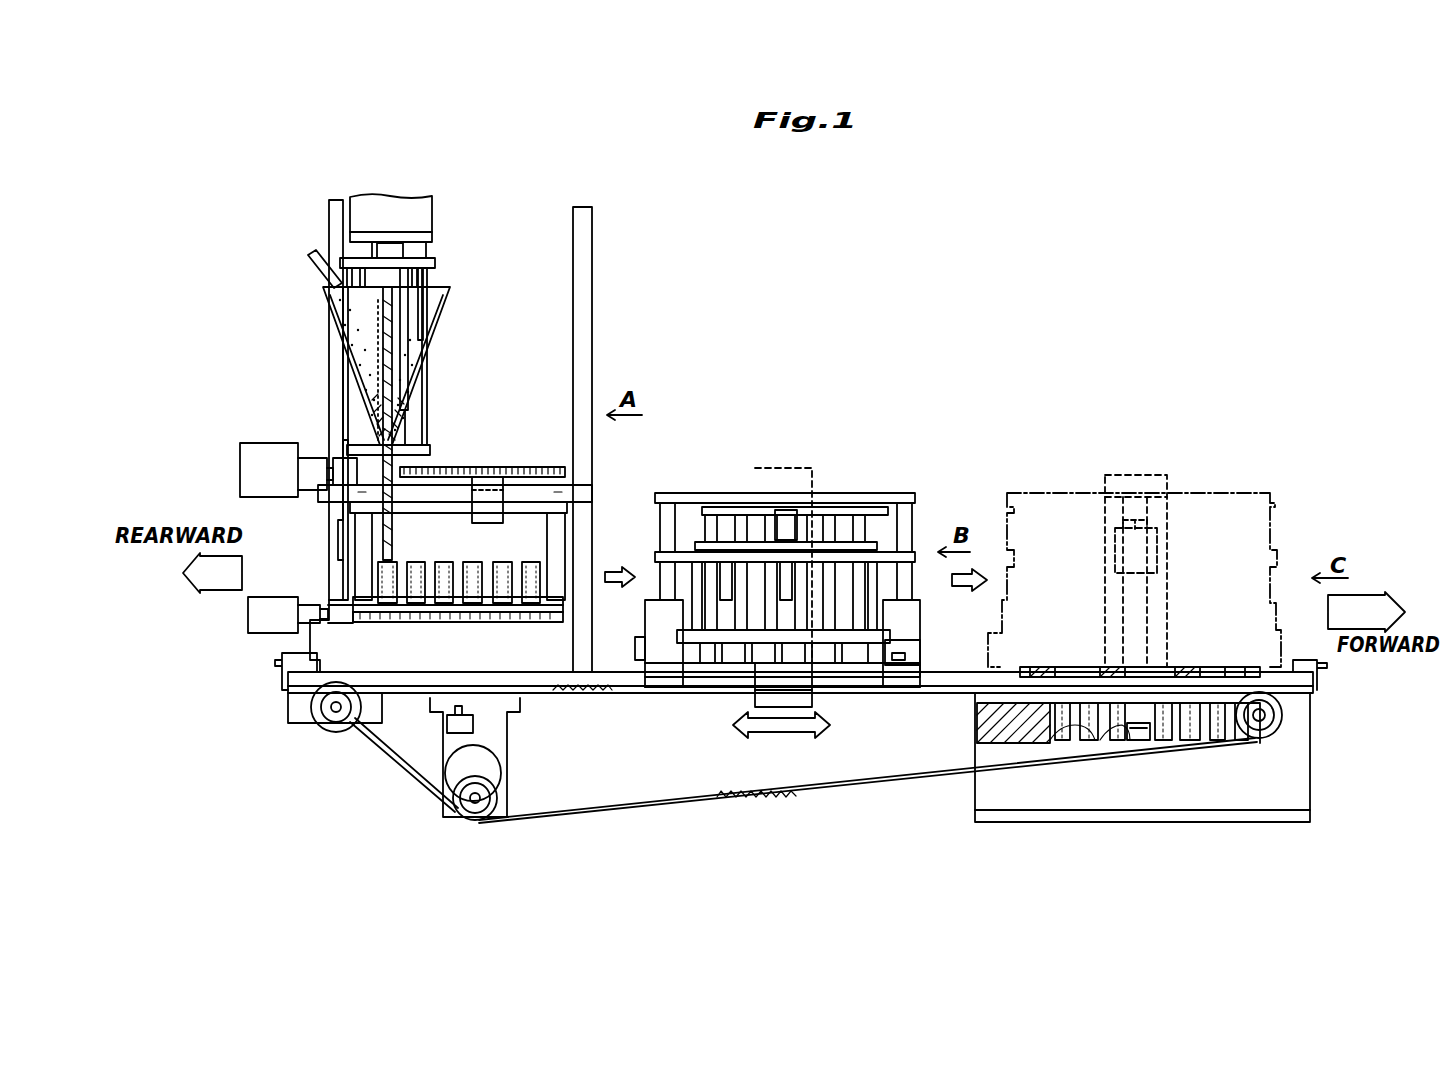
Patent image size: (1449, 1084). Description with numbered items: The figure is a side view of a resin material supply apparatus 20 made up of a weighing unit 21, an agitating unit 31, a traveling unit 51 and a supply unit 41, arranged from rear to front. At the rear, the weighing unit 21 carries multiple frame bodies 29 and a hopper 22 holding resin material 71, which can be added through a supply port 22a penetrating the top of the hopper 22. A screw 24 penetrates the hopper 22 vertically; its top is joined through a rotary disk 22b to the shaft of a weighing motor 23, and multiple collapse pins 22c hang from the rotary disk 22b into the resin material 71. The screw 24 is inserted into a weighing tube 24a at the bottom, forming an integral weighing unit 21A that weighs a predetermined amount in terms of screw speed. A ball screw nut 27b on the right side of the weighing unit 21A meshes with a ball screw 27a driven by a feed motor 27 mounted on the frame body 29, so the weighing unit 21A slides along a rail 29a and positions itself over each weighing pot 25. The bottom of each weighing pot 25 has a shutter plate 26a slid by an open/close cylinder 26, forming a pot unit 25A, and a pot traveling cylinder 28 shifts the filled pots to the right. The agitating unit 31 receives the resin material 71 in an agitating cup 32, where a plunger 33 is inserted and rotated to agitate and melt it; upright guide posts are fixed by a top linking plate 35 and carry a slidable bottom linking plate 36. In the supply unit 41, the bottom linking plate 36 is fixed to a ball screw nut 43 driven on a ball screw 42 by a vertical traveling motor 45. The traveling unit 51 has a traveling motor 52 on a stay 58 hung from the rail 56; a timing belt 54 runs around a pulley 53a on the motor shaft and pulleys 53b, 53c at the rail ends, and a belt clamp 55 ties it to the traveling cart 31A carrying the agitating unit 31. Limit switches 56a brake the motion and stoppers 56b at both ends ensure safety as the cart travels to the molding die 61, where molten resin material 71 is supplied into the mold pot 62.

The resin material supply apparatus 20 is at (818, 270).
The weighing unit 21 is at (527, 182).
The weighing unit 21A is at (492, 350).
The hopper 22 is at (333, 330).
The supply port 22a is at (308, 258).
The rotary disk 22b is at (437, 267).
The collapse pins 22c is at (422, 320).
The weighing motor 23 is at (412, 200).
The screw 24 is at (383, 367).
The weighing tube 24a is at (353, 528).
The weighing pot 25 is at (397, 563).
The pot unit 25A is at (380, 630).
The open/close cylinder 26 is at (247, 615).
The shutter plate 26a is at (428, 623).
The feed motor 27 is at (245, 465).
The ball screw 27a is at (437, 485).
The ball screw nut 27b is at (443, 437).
The pot traveling cylinder 28 is at (490, 540).
The frame body 29 is at (592, 302).
The rail 29a is at (517, 483).
The agitating unit 31 is at (882, 392).
The traveling cart 31A is at (895, 685).
The agitating cup 32 is at (743, 663).
The plunger 33 is at (733, 607).
The top linking plate 35 is at (835, 495).
The bottom linking plate 36 is at (877, 508).
The supply unit 41 is at (1207, 490).
The ball screw 42 is at (1115, 512).
The ball screw nut 43 is at (1118, 553).
The vertical traveling motor 45 is at (1140, 475).
The traveling unit 51 is at (373, 783).
The traveling motor 52 is at (500, 770).
The pulley 53a is at (478, 825).
The pulley 53b is at (324, 728).
The pulley 53c is at (1284, 728).
The timing belt 54 is at (746, 795).
The belt clamp 55 is at (825, 718).
The rail 56 is at (957, 677).
The limit switches 56a is at (450, 742).
The stoppers 56b is at (280, 663).
The stay 58 is at (520, 740).
The molding die 61 is at (1248, 812).
The mold pot 62 is at (1105, 745).
The resin material 71 is at (370, 393).